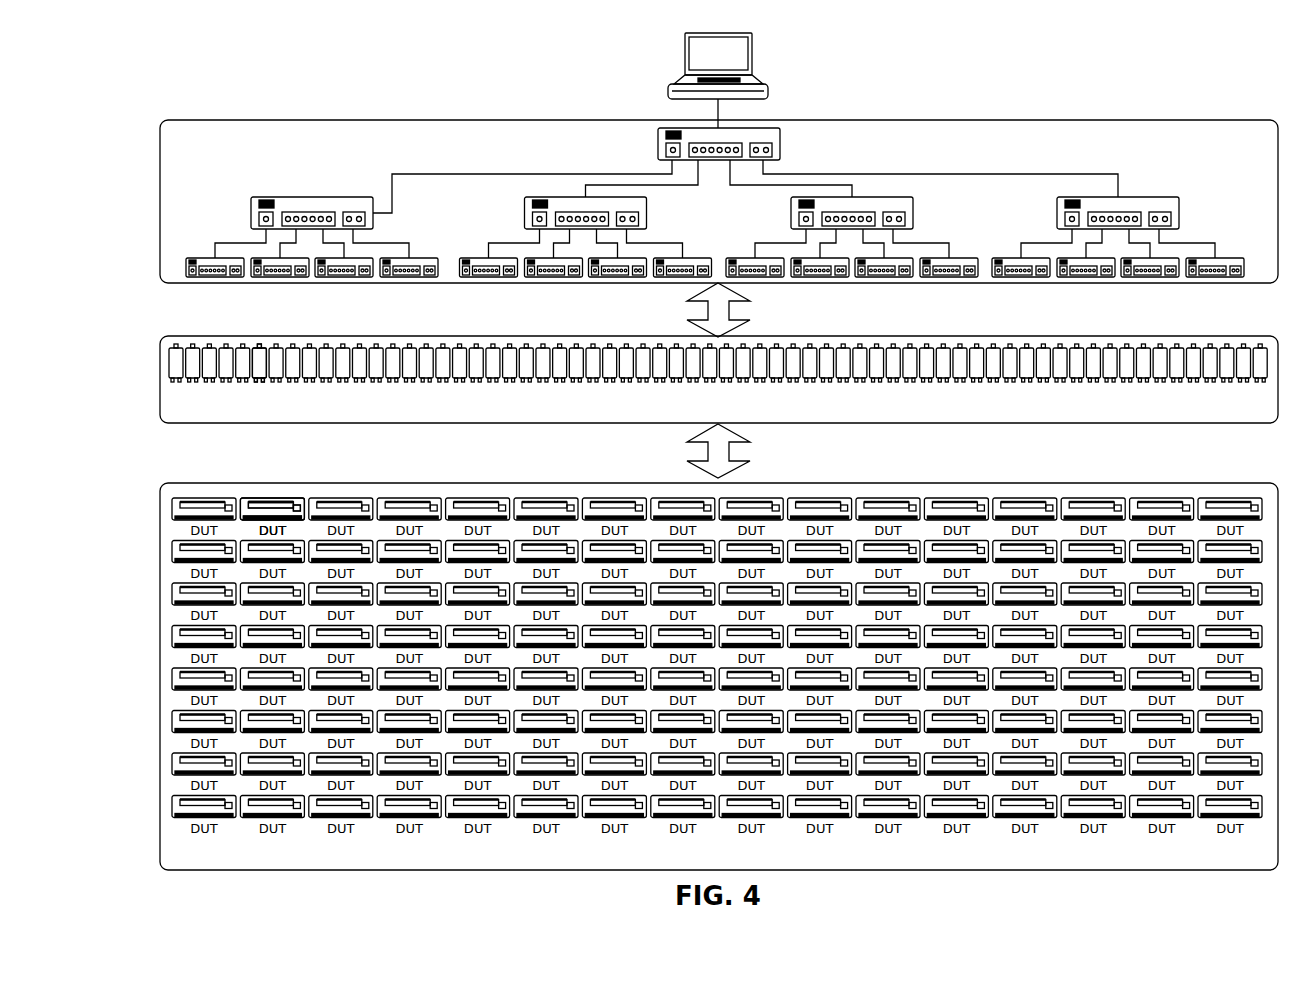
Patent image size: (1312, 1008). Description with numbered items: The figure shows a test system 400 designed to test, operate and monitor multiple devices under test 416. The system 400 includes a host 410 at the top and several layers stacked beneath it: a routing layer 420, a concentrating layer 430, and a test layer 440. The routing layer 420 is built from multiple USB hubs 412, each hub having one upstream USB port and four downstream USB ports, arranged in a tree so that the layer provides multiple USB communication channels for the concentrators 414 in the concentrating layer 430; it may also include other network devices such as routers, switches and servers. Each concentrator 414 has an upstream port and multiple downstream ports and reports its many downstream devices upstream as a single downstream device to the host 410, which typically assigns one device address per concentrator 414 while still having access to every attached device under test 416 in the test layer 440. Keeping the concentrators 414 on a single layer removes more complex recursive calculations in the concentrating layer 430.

The test system 400 is at (978, 87).
The host 410 is at (755, 61).
The USB hub 412 is at (312, 197).
The concentrator 414 is at (258, 360).
The device under test (DUT) 416 is at (267, 498).
The routing layer 420 is at (736, 224).
The concentrating layer 430 is at (738, 414).
The test layer 440 is at (738, 862).